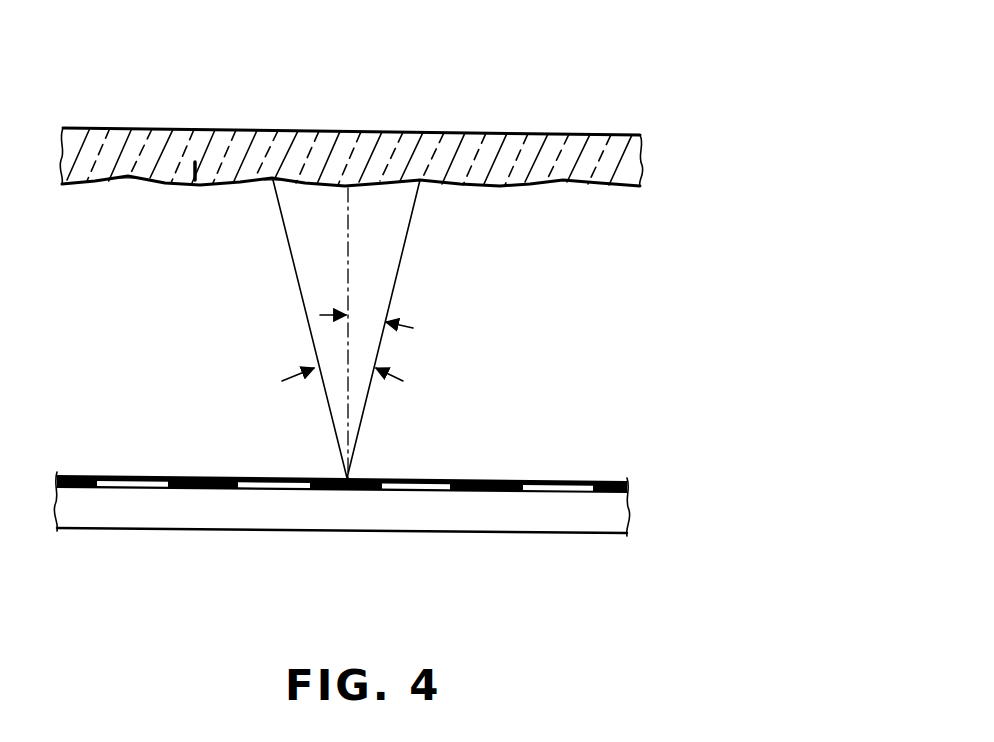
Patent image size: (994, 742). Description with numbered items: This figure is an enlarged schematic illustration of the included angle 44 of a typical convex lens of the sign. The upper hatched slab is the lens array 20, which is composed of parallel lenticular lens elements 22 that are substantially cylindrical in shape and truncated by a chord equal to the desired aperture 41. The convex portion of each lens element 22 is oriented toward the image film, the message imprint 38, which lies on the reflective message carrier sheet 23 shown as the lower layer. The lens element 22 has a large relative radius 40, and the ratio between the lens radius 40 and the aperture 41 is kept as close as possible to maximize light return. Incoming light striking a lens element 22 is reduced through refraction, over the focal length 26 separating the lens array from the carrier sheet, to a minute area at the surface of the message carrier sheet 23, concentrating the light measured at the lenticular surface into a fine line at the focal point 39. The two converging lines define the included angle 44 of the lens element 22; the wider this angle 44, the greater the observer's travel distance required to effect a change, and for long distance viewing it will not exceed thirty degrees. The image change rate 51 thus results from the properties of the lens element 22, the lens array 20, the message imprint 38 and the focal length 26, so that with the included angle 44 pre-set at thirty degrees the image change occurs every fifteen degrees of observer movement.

The lens array 20 is at (450, 134).
The lenticular lens element 22 is at (503, 187).
The message carrier sheet 23 is at (455, 515).
The focal length 26 is at (528, 277).
The message imprint 38 is at (558, 482).
The focal point 39 is at (346, 331).
The lens radius 40 is at (196, 128).
The aperture 41 is at (272, 180).
The included angle 44 is at (342, 348).
The image change rate 51 is at (414, 335).